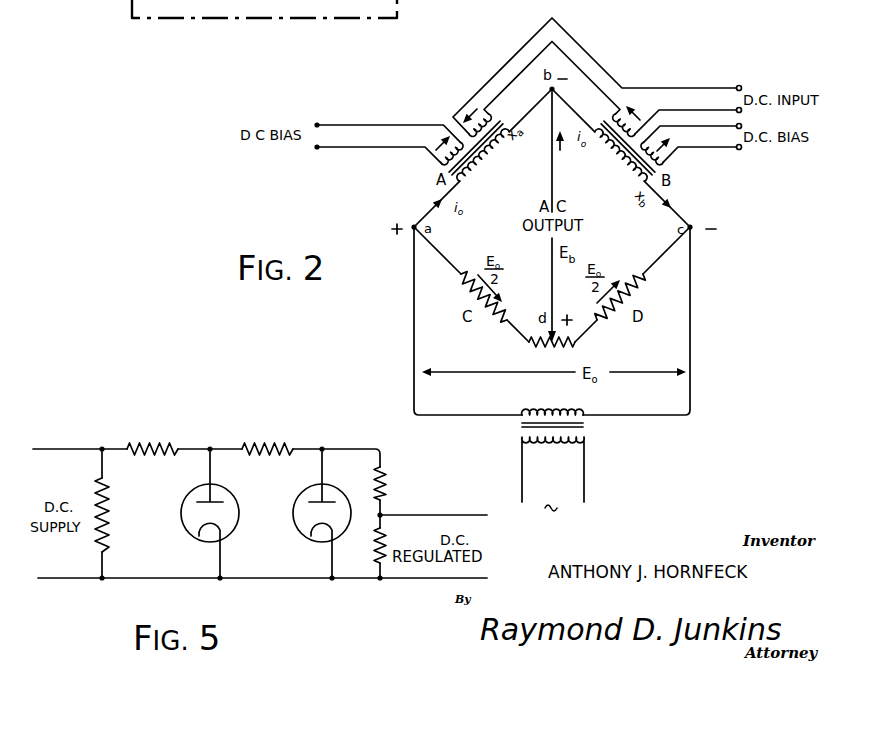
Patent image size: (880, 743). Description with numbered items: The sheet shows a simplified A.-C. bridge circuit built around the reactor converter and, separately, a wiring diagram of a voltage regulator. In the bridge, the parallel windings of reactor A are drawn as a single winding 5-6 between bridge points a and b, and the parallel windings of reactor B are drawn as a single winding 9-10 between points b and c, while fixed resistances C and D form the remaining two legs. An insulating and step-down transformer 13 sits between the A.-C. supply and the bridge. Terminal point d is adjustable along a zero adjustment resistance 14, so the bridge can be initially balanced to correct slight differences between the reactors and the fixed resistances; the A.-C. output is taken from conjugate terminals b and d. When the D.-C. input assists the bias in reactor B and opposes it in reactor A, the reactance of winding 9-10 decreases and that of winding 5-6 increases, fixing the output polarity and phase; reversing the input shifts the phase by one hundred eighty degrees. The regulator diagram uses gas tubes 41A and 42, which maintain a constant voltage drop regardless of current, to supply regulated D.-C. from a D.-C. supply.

In FIG. 2, the winding 5-6 is at (493, 165).
In FIG. 2, the winding 9-10 is at (610, 165).
In FIG. 2, the insulating and step-down transformer 13 is at (570, 460).
In FIG. 2, the zero adjustment resistance 14 is at (552, 354).
In FIG. 5, the gas tube 41A is at (231, 494).
In FIG. 5, the gas tube 42 is at (328, 490).